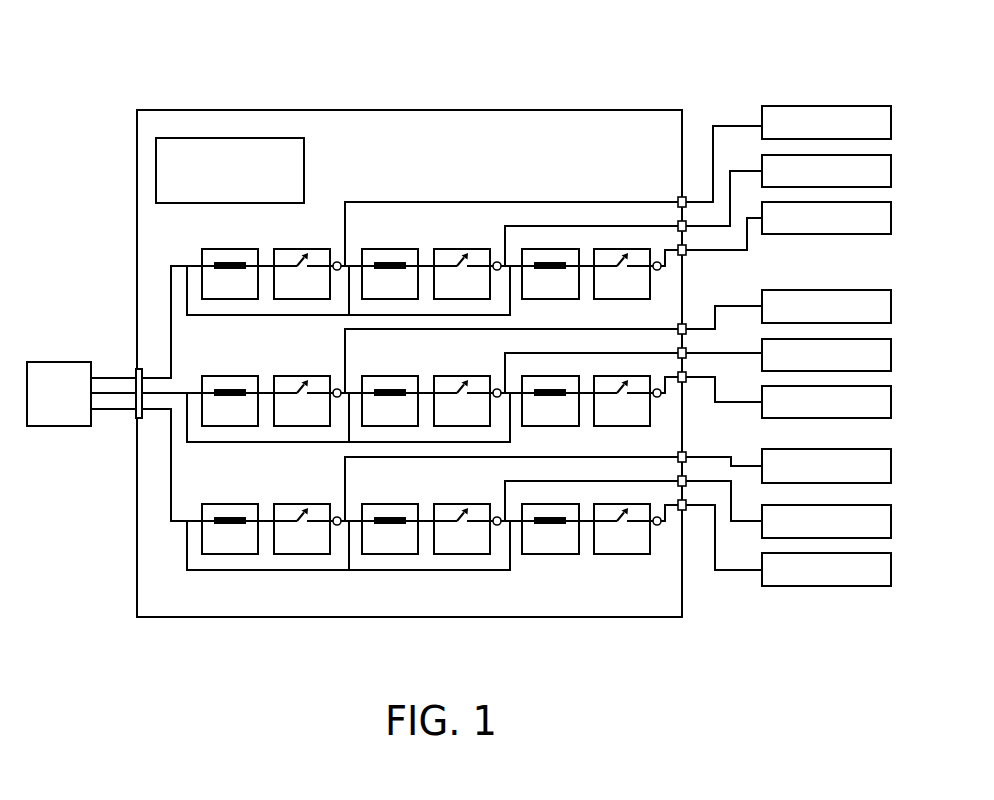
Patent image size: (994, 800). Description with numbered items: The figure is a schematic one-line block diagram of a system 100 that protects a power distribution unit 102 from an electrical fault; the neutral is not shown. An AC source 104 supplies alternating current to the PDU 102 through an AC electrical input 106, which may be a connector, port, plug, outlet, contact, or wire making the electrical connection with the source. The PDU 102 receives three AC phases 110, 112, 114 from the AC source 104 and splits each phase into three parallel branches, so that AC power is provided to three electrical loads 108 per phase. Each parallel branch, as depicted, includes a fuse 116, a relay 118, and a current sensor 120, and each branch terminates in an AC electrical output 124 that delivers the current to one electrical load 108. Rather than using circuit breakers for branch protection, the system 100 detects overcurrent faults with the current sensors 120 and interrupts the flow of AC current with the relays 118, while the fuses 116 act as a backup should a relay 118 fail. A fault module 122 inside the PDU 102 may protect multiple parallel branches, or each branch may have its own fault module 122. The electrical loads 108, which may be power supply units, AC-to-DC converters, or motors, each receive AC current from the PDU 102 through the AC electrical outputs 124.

The system 100 is at (118, 41).
The power distribution unit 102 is at (517, 185).
The AC source 104 is at (42, 404).
The AC electrical input 106 is at (136, 369).
The electrical load 108 is at (843, 580).
The AC phase 110 is at (171, 266).
The AC phase 112 is at (172, 393).
The AC phase 114 is at (171, 521).
The fuse 116 is at (567, 550).
The relay 118 is at (639, 550).
The current sensor 120 is at (657, 516).
The fault module 122 is at (213, 192).
The AC electrical output 124 is at (665, 562).